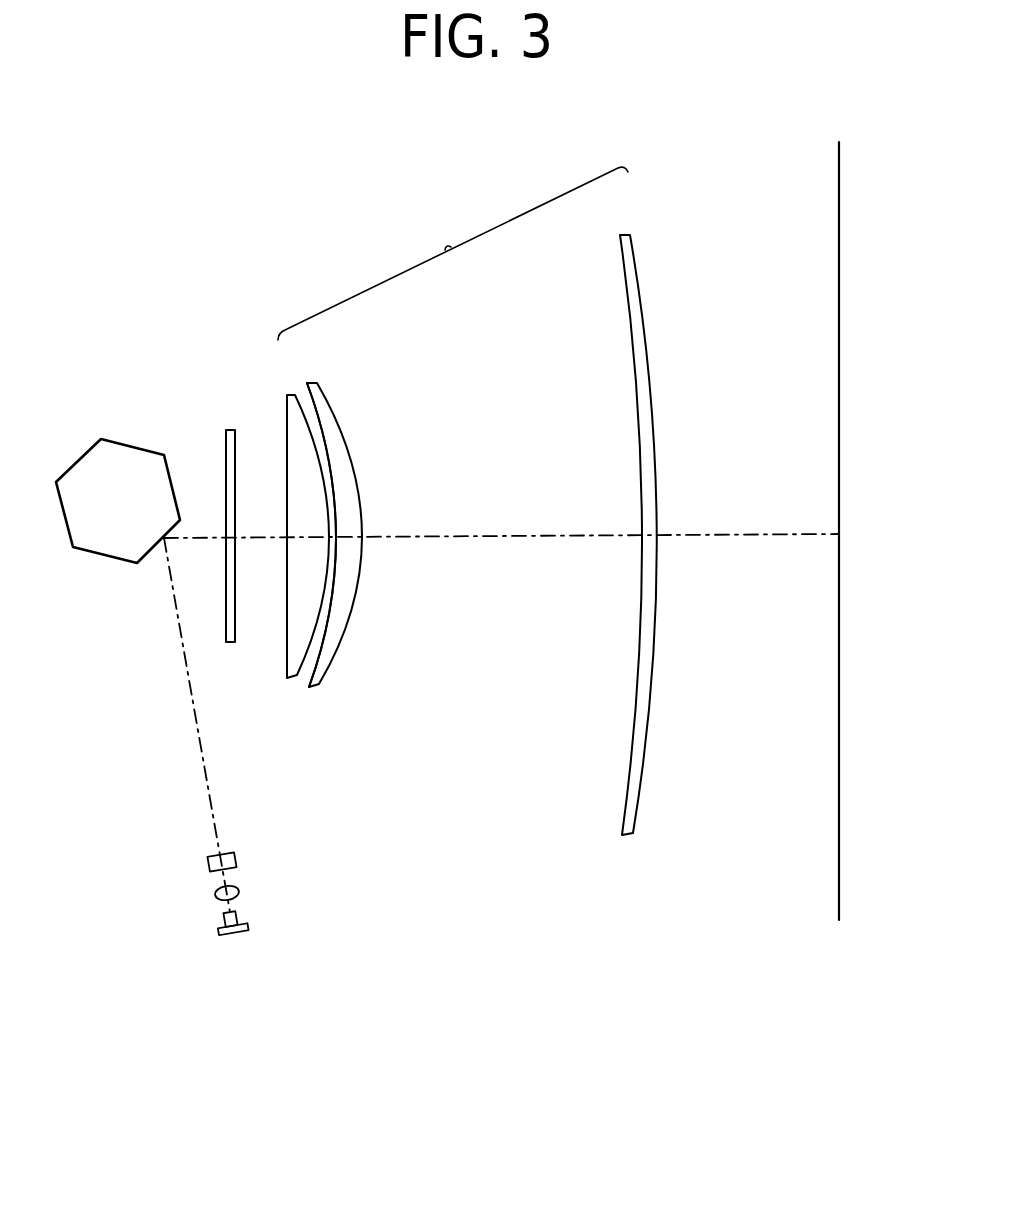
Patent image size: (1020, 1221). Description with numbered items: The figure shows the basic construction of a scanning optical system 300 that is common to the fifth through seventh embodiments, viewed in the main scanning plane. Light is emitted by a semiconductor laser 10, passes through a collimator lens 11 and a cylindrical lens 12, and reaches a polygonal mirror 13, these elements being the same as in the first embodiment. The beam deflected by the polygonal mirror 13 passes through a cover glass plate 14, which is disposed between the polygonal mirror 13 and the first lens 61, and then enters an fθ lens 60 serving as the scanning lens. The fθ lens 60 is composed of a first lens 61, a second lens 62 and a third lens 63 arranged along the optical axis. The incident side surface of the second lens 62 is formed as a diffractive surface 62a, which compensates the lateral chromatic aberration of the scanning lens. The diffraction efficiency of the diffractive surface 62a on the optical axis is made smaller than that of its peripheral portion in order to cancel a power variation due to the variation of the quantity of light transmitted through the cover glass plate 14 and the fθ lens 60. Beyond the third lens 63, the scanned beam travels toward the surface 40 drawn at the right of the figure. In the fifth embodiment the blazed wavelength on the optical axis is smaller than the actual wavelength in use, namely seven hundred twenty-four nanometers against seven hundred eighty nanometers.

The semiconductor laser 10 is at (222, 925).
The collimator lens 11 is at (217, 892).
The cylindrical lens 12 is at (207, 858).
The polygonal mirror 13 is at (105, 548).
The cover glass plate 14 is at (231, 648).
The scanned surface (photosensitive member) 40 is at (840, 158).
The fθ lens 60 is at (453, 253).
The first lens 61 is at (294, 393).
The second lens 62 is at (318, 382).
The diffractive surface 62a is at (310, 684).
The third lens 63 is at (620, 249).
The scanning optical system 300 is at (447, 952).